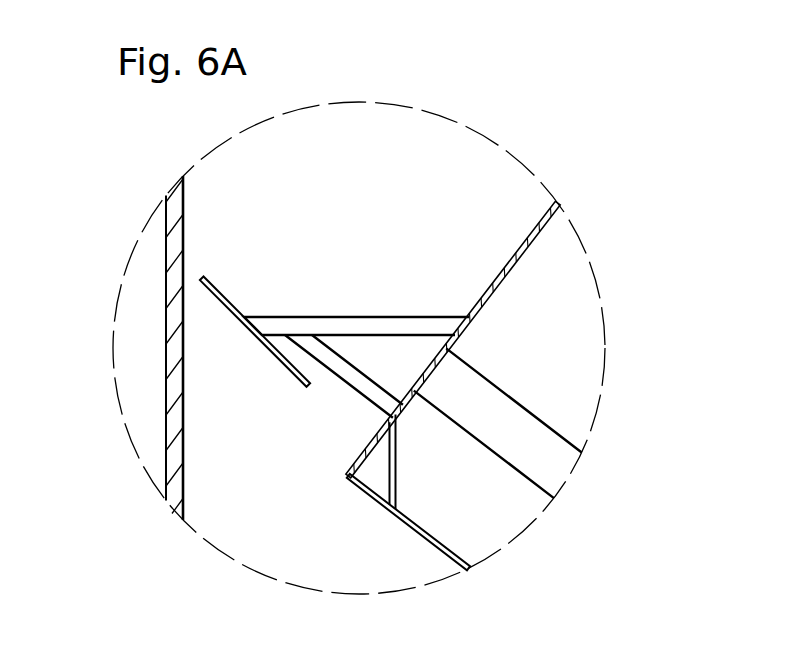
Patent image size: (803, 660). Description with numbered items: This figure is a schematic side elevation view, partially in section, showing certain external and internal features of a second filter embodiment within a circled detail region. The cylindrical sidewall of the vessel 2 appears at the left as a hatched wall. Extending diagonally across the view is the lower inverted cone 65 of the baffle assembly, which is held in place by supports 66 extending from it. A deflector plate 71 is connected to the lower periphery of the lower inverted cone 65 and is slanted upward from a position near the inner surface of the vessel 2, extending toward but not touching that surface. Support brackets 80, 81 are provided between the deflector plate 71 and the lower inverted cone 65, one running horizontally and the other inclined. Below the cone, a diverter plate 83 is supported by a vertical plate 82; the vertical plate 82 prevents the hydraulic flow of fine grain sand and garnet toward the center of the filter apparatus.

The vessel 2 is at (166, 333).
The deflector plate 71 is at (213, 283).
The support bracket 80 is at (360, 317).
The support bracket 81 is at (355, 393).
The lower inverted cone 65 is at (508, 262).
The supports 66 is at (515, 443).
The vertical plate 82 is at (392, 466).
The diverter plate 83 is at (420, 537).